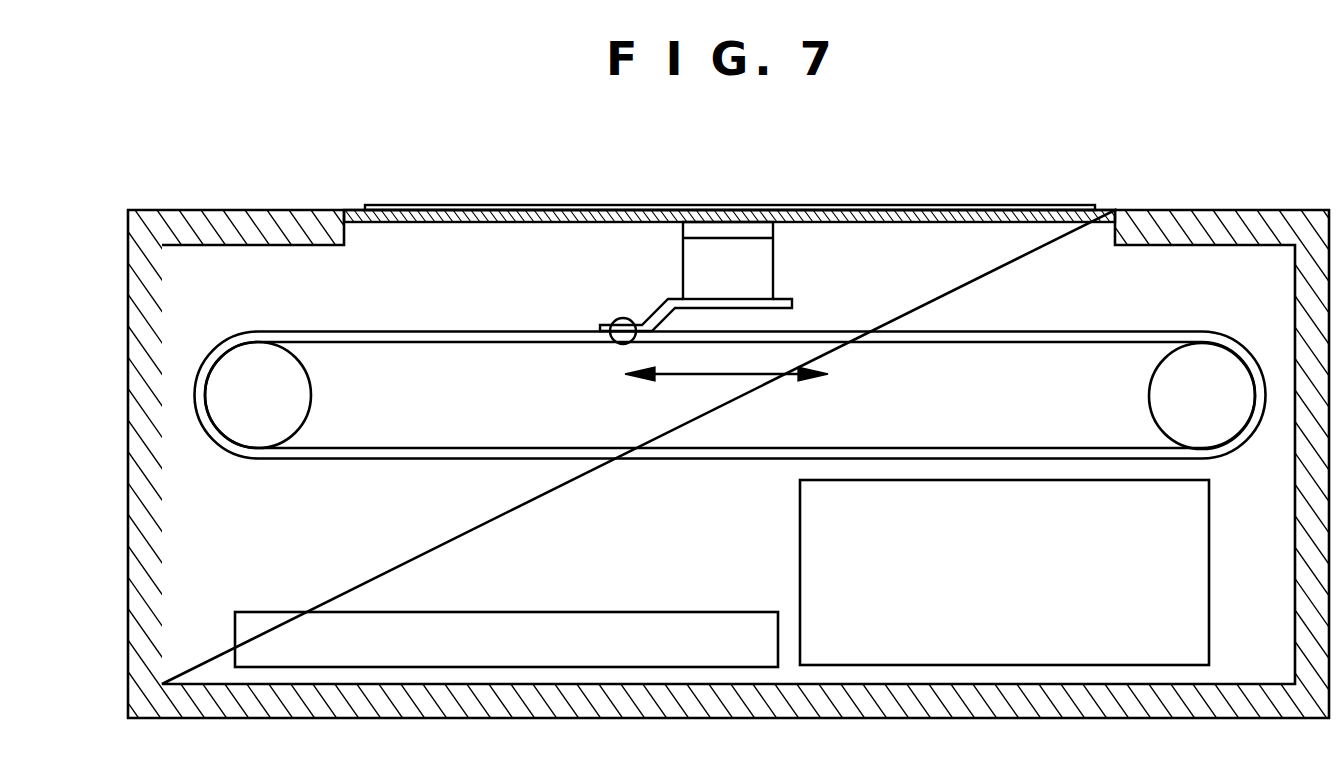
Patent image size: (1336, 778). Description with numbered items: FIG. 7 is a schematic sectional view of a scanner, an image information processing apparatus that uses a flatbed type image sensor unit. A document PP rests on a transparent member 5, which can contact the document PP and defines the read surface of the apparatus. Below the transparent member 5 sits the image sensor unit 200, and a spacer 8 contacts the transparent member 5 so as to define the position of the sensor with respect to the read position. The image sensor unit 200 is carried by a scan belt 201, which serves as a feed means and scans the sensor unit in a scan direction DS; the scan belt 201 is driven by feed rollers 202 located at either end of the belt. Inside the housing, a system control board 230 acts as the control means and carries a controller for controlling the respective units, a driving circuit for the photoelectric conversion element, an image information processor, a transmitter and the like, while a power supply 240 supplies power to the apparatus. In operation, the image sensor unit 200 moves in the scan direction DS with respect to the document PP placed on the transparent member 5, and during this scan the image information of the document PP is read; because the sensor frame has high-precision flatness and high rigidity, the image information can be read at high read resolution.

The document PP is at (562, 205).
The transparent member 5 is at (636, 210).
The spacer 8 is at (722, 224).
The image sensor unit 200 is at (763, 273).
The scan belt 201 is at (1020, 338).
The feed rollers 202 is at (262, 360).
The system control board 230 is at (523, 625).
The power supply 240 is at (800, 523).
The scan direction DS is at (726, 388).